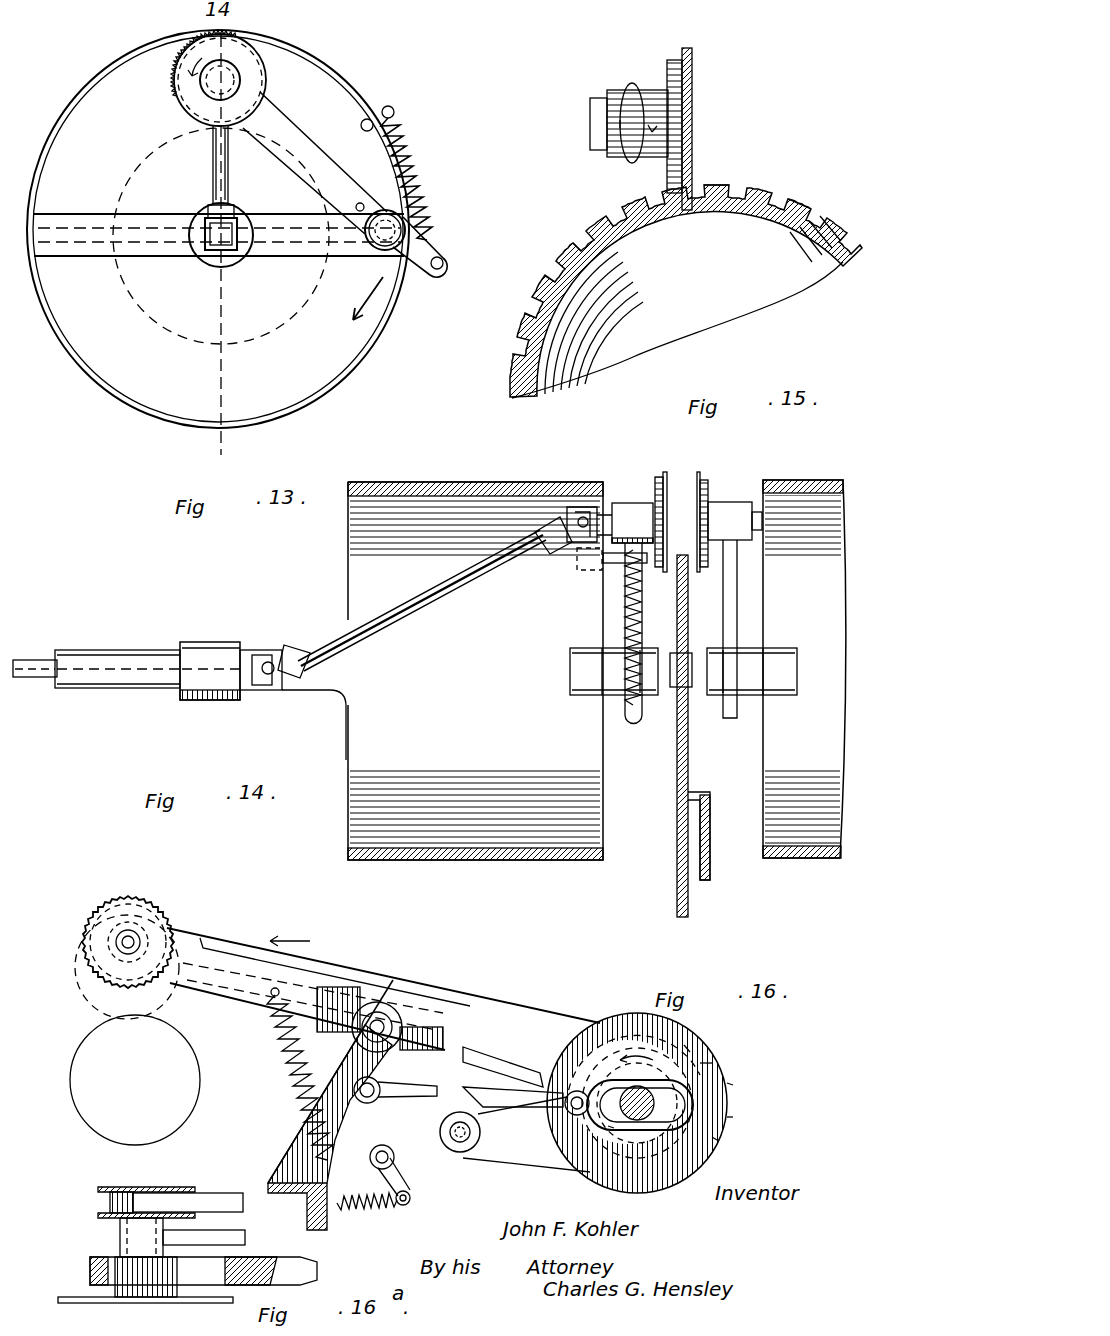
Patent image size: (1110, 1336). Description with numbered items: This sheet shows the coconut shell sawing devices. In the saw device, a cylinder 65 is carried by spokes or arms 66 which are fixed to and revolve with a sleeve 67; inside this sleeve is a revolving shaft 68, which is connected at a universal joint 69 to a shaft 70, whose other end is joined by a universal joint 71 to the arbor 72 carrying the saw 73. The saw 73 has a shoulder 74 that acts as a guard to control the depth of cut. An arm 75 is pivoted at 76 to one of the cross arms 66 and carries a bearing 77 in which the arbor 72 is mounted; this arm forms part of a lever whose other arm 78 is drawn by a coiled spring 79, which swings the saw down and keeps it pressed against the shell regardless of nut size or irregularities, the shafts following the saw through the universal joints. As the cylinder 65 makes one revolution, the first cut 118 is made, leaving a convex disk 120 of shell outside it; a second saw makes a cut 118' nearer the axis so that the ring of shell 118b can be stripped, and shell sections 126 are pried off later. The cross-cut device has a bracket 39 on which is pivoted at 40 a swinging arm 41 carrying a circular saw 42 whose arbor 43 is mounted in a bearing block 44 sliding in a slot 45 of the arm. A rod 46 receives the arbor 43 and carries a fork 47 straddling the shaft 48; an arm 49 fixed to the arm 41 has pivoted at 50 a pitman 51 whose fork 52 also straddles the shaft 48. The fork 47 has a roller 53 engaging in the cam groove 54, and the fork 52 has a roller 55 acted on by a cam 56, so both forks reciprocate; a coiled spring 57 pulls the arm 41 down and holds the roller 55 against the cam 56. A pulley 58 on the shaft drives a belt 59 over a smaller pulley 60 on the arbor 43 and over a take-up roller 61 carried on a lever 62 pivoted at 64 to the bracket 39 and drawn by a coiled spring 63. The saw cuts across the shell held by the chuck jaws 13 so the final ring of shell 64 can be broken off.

In FIG. 14, the chuck jaws 13 is at (677, 740).
In FIG. 16, the bracket 39 is at (330, 1105).
In FIG. 16, the pivot 40 is at (399, 1004).
In FIG. 16, the swinging arm 41 is at (343, 990).
In FIG. 16, the circular saw 42 is at (138, 898).
In FIG. 16A, the circular saw 42 is at (73, 1297).
In FIG. 16, the saw arbor 43 is at (148, 925).
In FIG. 16A, the bearing block 44 is at (117, 1253).
In FIG. 16A, the slot 45 is at (209, 1257).
In FIG. 16, the rod 46 is at (493, 1056).
In FIG. 16A, the rod 46 is at (222, 1226).
In FIG. 16, the fork 47 is at (733, 1084).
In FIG. 16, the shaft 48 is at (612, 1128).
In FIG. 16, the arm 49 is at (386, 1074).
In FIG. 16, the pivot 50 is at (380, 1097).
In FIG. 16, the pitman 51 is at (508, 1101).
In FIG. 16, the fork 52 is at (707, 1064).
In FIG. 16, the roller 53 is at (733, 1117).
In FIG. 16, the cam groove 54 is at (717, 1140).
In FIG. 16, the roller 55 is at (570, 1110).
In FIG. 16, the cam 56 is at (602, 1022).
In FIG. 16, the coiled spring 57 is at (295, 1082).
In FIG. 16, the pulley 58 is at (697, 1050).
In FIG. 16, the belt 59 is at (598, 1023).
In FIG. 16A, the belt 59 is at (220, 1200).
In FIG. 16A, the pulley 60 is at (142, 1187).
In FIG. 16, the take-up roller 61 is at (474, 1173).
In FIG. 16, the lever 62 is at (407, 1192).
In FIG. 16, the coiled spring 63 is at (360, 1208).
In FIG. 15, the ring of shell 64 is at (722, 193).
In FIG. 16, the ring of shell 64 is at (392, 1153).
In FIG. 13, the cylinder 65 is at (363, 372).
In FIG. 14, the cylinder 65 is at (468, 483).
In FIG. 13, the spokes 66 is at (263, 257).
In FIG. 14, the sleeve 67 is at (160, 647).
In FIG. 14, the revolving shaft 68 is at (37, 660).
In FIG. 14, the universal joint 69 is at (273, 660).
In FIG. 14, the shaft 70 is at (414, 594).
In FIG. 14, the universal joint 71 is at (560, 547).
In FIG. 15, the arbor 72 is at (596, 152).
In FIG. 13, the saw 73 is at (178, 80).
In FIG. 15, the saw 73 is at (692, 58).
In FIG. 14, the saw 73 is at (666, 472).
In FIG. 15, the shoulder 74 is at (673, 54).
In FIG. 14, the shoulder 74 is at (657, 478).
In FIG. 13, the arm 75 is at (307, 146).
In FIG. 14, the arm 75 is at (622, 620).
In FIG. 13, the pivot 76 is at (406, 228).
In FIG. 14, the bearing 77 is at (637, 513).
In FIG. 13, the lever arm 78 is at (420, 265).
In FIG. 13, the coiled spring 79 is at (410, 172).
In FIG. 14, the coiled spring 79 is at (645, 618).
In FIG. 15, the first cut 118 is at (524, 291).
In FIG. 15, the ring of shell 118b is at (559, 256).
In FIG. 15, the second circular cut 118' is at (569, 232).
In FIG. 15, the convex disk of shell 120 is at (530, 360).
In FIG. 15, the shell section 126 is at (770, 196).